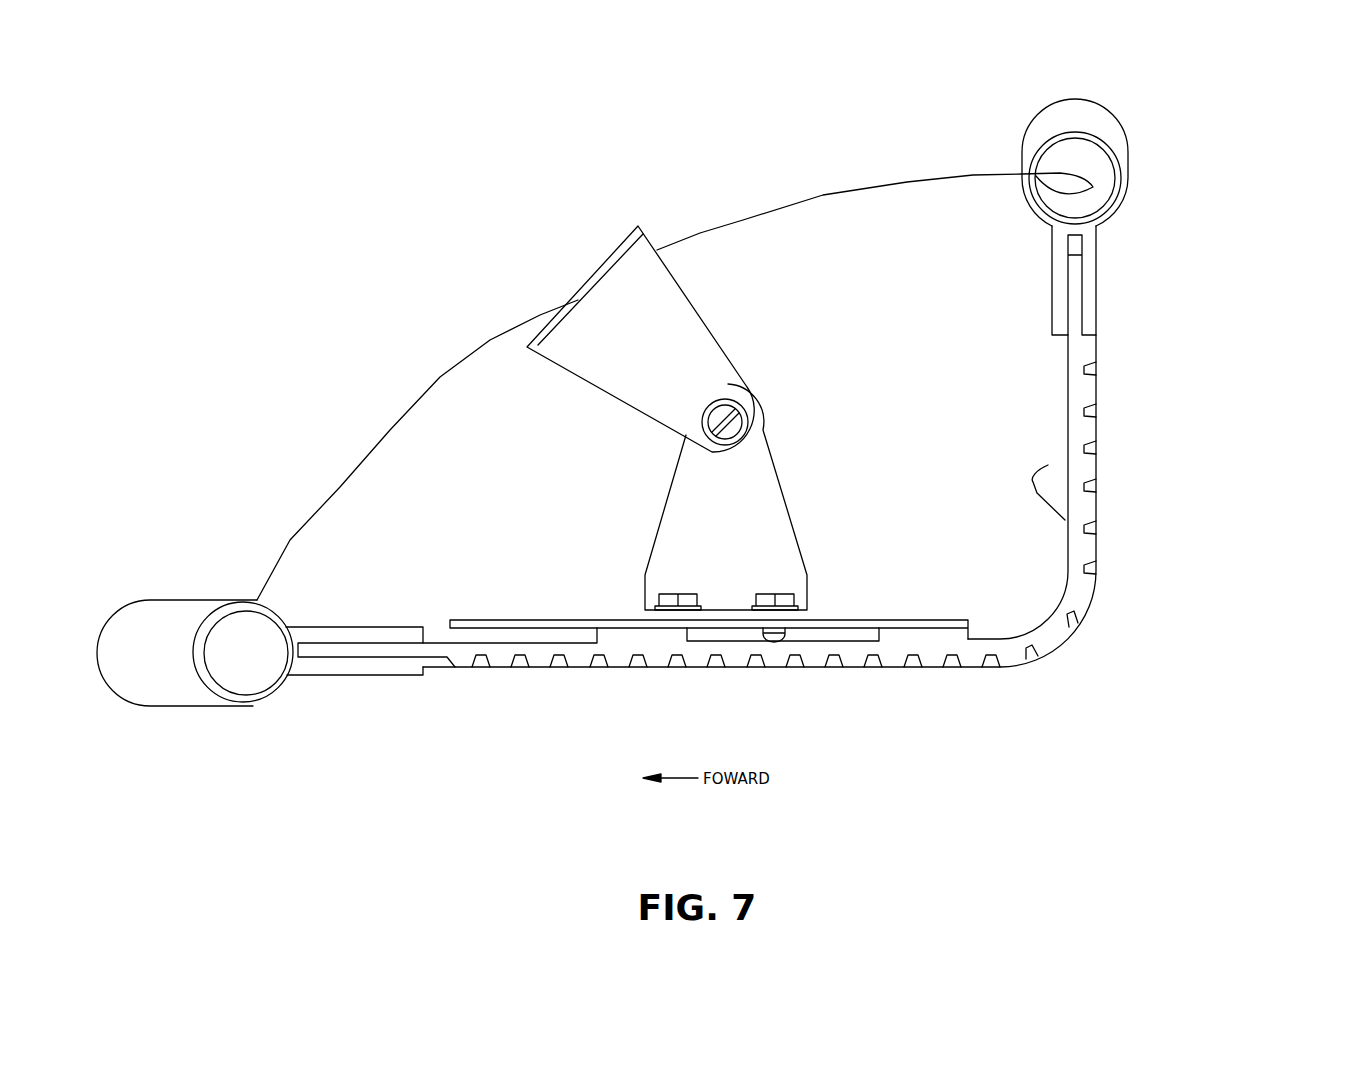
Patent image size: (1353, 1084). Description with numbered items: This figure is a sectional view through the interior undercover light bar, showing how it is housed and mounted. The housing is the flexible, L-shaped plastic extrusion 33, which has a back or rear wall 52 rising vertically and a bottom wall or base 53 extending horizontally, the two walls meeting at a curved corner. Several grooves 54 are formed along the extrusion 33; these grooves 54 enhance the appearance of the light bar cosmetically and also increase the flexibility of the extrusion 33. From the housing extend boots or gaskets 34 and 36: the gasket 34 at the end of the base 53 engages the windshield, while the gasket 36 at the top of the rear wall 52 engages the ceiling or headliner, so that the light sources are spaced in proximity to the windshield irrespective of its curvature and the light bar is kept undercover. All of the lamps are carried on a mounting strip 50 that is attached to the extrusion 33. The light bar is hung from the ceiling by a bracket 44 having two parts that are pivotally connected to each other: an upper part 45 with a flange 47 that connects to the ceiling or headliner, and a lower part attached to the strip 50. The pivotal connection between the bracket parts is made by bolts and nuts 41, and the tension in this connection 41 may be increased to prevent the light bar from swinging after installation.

The flexible housing 33 is at (1078, 590).
The boot or gasket 34 is at (130, 668).
The boot or gasket 36 is at (1124, 118).
The connection (bolts and nuts) 41 is at (732, 388).
The bracket 44 is at (797, 466).
The upper part 45 is at (724, 317).
The flange 47 is at (594, 262).
The mounting strip 50 is at (948, 617).
The back or rear wall 52 is at (1048, 465).
The bottom wall or base 53 is at (457, 643).
The grooves 54 is at (794, 660).